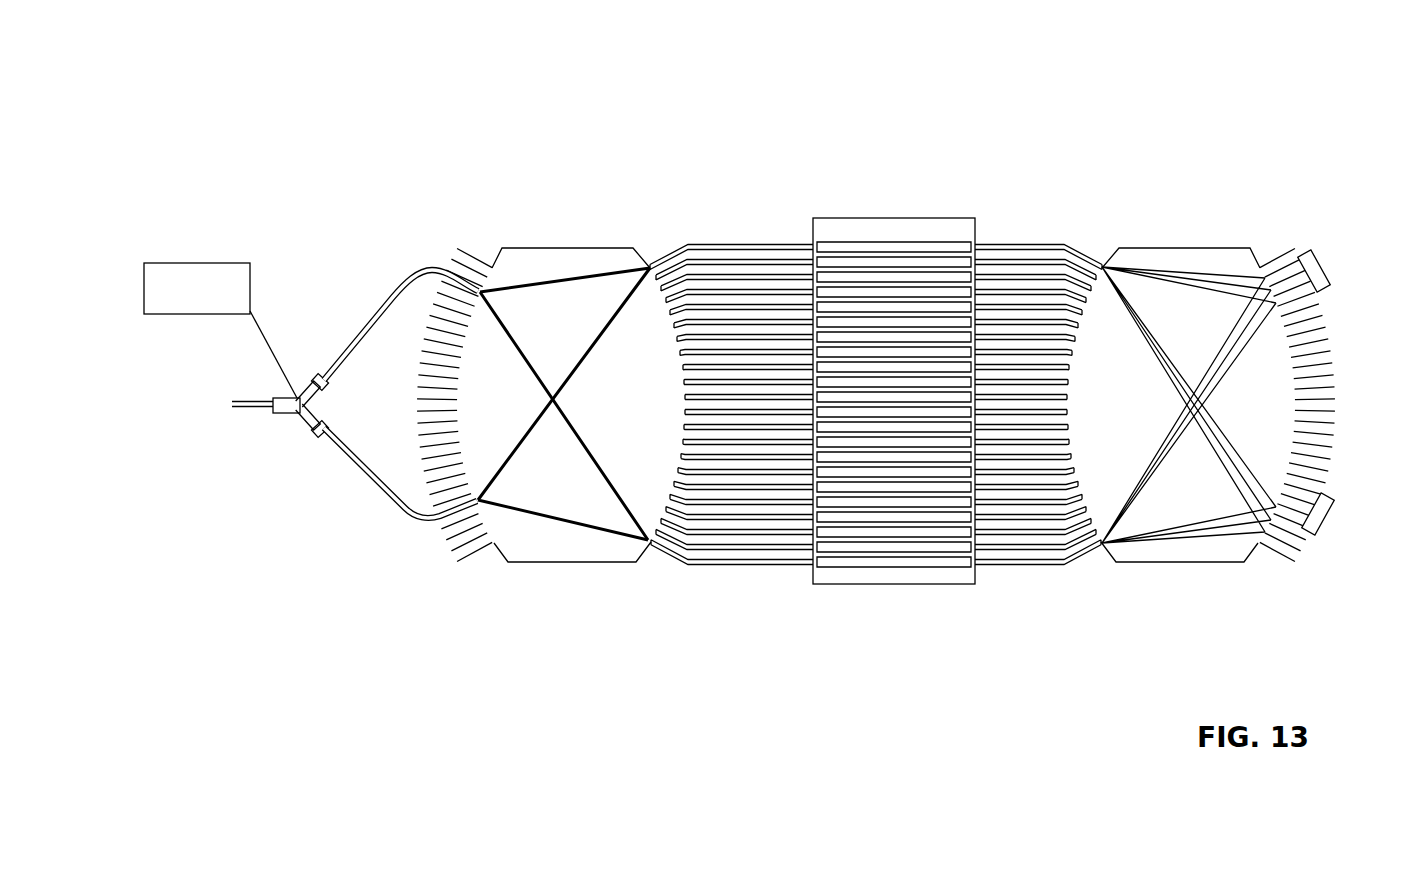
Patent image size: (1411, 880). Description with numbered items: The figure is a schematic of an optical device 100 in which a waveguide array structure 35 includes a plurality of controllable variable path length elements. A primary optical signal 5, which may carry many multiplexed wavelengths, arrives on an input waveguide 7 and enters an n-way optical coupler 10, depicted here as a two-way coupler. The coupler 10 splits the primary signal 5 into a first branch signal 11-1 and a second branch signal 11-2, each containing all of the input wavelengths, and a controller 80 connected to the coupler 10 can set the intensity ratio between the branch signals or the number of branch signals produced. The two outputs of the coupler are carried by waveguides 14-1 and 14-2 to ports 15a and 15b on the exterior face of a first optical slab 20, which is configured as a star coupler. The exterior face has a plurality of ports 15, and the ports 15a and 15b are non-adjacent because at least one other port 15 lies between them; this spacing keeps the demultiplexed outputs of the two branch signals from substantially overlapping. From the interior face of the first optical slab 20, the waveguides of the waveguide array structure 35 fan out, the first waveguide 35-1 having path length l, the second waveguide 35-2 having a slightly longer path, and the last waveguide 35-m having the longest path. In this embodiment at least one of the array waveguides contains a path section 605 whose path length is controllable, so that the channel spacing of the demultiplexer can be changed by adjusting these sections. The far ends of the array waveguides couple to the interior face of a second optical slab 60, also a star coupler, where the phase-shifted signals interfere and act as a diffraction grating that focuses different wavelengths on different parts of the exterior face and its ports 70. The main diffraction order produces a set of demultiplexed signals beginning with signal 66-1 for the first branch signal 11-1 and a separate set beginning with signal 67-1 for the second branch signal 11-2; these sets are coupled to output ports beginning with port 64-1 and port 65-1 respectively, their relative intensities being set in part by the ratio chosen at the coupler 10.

The optical device 100 is at (410, 112).
The controller 80 is at (160, 262).
The primary optical signal 5 is at (262, 389).
The waveguide 7 is at (236, 409).
The n-way optical coupler 10 is at (280, 418).
The branch signal 11-1 is at (360, 312).
The branch signal 11-2 is at (338, 462).
The waveguide 14-1 is at (412, 275).
The waveguide 14-2 is at (415, 520).
The ports 15 is at (420, 348).
The port 15a is at (480, 300).
The port 15b is at (479, 494).
The first optical slab 20 is at (568, 596).
The waveguide 35-1 is at (726, 244).
The waveguide 35-2 is at (766, 258).
The waveguide 35-m is at (725, 567).
The waveguide array structure 35 is at (875, 596).
The path section 605 is at (942, 243).
The second optical slab 60 is at (1180, 597).
The demultiplexed signal 66-1 is at (1195, 272).
The demultiplexed signal 67-1 is at (1233, 433).
The ports 70 is at (1342, 340).
The port 64-1 is at (1322, 270).
The port 65-1 is at (1326, 522).